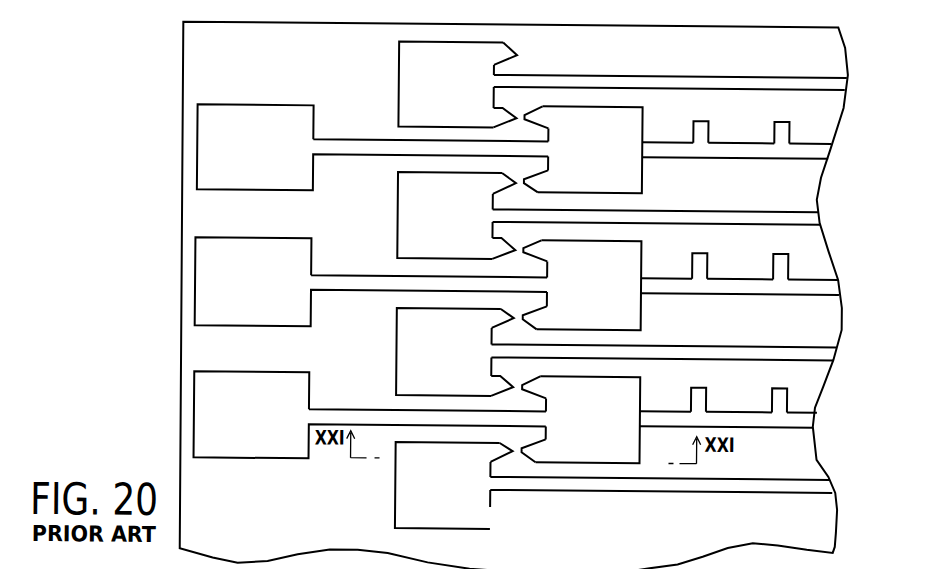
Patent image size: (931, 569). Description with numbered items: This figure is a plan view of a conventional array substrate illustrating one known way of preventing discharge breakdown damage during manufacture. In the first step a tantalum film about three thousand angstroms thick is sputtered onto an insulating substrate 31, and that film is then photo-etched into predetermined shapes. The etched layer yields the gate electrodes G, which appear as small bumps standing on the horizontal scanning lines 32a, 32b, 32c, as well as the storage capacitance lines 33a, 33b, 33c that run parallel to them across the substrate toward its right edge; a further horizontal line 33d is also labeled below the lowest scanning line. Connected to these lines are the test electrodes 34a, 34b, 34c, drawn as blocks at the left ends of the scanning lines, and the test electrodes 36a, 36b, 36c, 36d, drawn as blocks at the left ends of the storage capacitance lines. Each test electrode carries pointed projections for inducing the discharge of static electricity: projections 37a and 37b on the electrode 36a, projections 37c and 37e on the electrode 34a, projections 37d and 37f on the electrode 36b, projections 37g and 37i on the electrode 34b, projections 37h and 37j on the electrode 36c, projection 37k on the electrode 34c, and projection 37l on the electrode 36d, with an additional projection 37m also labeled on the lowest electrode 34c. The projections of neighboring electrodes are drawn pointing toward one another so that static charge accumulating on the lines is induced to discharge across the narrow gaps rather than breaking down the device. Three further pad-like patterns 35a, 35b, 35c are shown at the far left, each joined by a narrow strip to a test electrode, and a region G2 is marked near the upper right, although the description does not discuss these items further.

The insulating substrate 31 is at (180, 98).
The scanning line 32a is at (738, 150).
The scanning line 32b is at (745, 286).
The scanning line 32c is at (745, 420).
The storage capacitance line 33a is at (740, 85).
The storage capacitance line 33b is at (740, 215).
The storage capacitance line 33c is at (757, 350).
The storage capacitor line 33d is at (767, 490).
The test electrode 34a is at (627, 118).
The test electrode 34b is at (633, 263).
The test electrode 34c is at (633, 393).
The gate terminal pad 35a is at (260, 117).
The gate terminal pad 35b is at (258, 257).
The gate terminal pad 35c is at (259, 387).
The test electrode 36a is at (408, 63).
The test electrode 36b is at (407, 185).
The test electrode 36c is at (409, 356).
The test electrode 36d is at (404, 498).
The projection 37a is at (510, 53).
The projection 37b is at (508, 115).
The projection 37c is at (523, 116).
The projection 37d is at (502, 180).
The projection 37e is at (529, 180).
The projection 37f is at (505, 252).
The projection 37g is at (535, 248).
The projection 37h is at (511, 316).
The projection 37i is at (537, 325).
The projection 37j is at (512, 381).
The projection 37k is at (528, 386).
The projection 37l is at (504, 454).
The projecting portion 37m is at (540, 455).
The gate electrode G is at (693, 128).
The gate region G2 is at (797, 77).